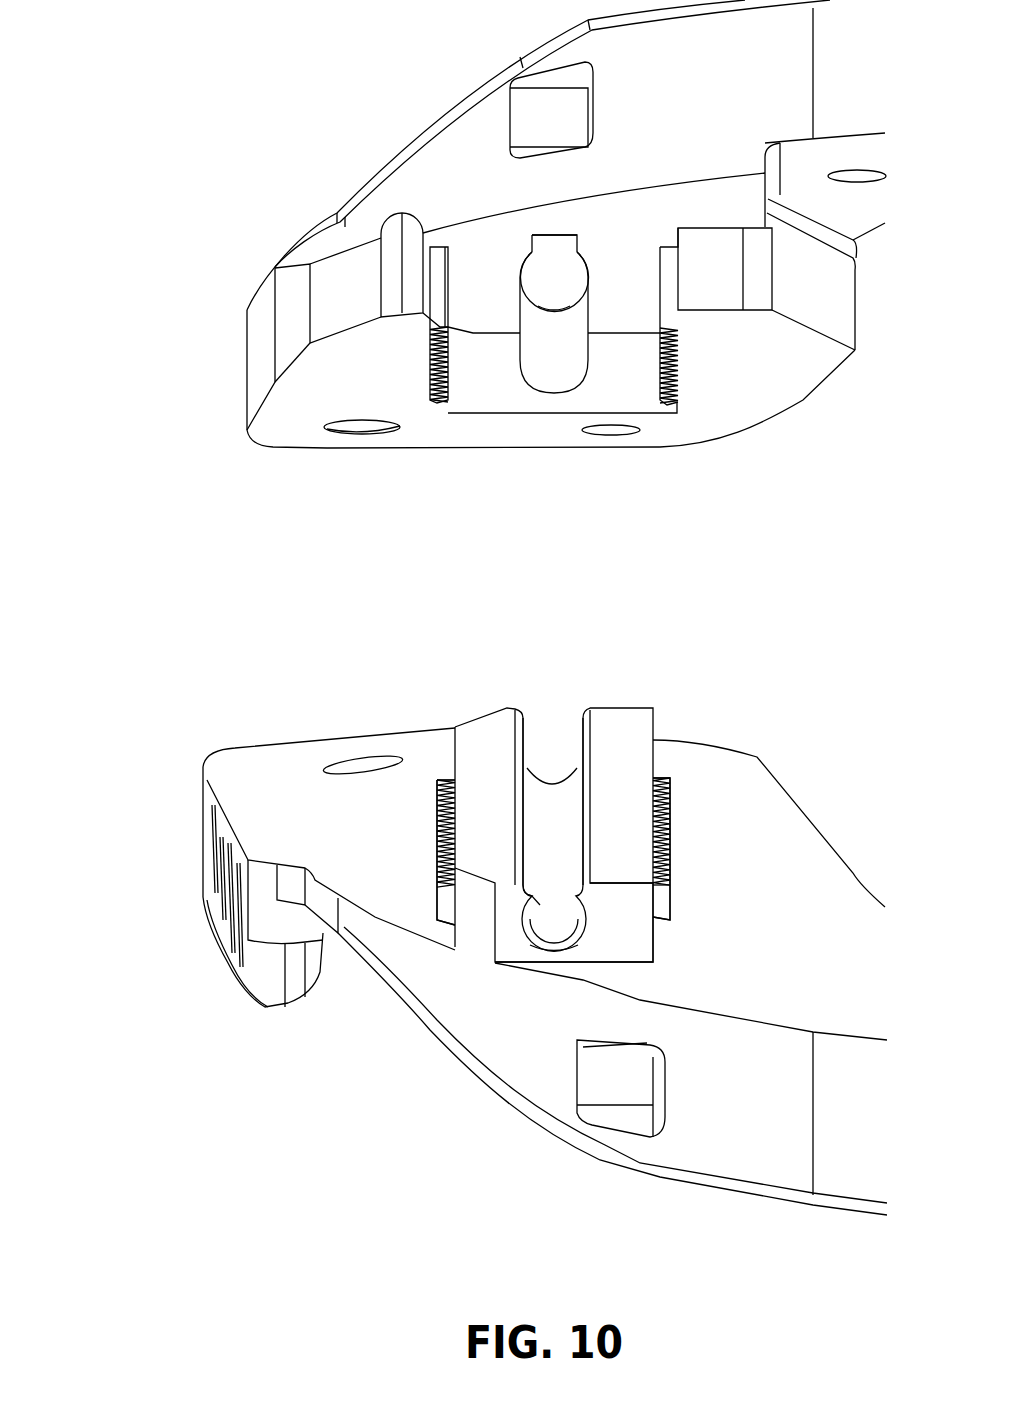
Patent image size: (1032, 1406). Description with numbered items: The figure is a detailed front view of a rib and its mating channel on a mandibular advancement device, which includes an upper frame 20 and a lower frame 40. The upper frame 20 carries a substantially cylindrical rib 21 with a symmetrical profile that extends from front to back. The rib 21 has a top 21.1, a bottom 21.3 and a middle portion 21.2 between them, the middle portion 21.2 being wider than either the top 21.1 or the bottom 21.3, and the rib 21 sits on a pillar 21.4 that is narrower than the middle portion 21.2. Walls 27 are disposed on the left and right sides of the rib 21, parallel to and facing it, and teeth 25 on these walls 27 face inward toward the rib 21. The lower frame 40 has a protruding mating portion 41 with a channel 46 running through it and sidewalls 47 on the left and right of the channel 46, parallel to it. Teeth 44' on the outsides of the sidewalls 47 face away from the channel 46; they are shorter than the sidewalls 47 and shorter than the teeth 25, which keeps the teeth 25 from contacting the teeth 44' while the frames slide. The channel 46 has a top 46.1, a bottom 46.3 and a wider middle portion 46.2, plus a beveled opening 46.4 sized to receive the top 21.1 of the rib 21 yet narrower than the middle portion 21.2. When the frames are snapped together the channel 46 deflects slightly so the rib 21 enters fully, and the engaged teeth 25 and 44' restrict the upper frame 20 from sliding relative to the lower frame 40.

The upper frame 20 is at (202, 177).
The rib 21 is at (555, 363).
The top 21.1 is at (548, 310).
The middle portion 21.2 is at (532, 278).
The bottom 21.3 is at (553, 276).
The pillar 21.4 is at (547, 238).
The teeth 25 is at (450, 365).
The walls 27 is at (432, 322).
The lower frame 40 is at (265, 1132).
The mating portion 41 is at (628, 927).
The teeth 44' is at (551, 788).
The channel 46 is at (560, 822).
The top 46.1 is at (553, 898).
The middle portion 46.2 is at (555, 927).
The bottom 46.3 is at (555, 953).
The beveled opening 46.4 is at (583, 715).
The sidewalls 47 is at (457, 900).